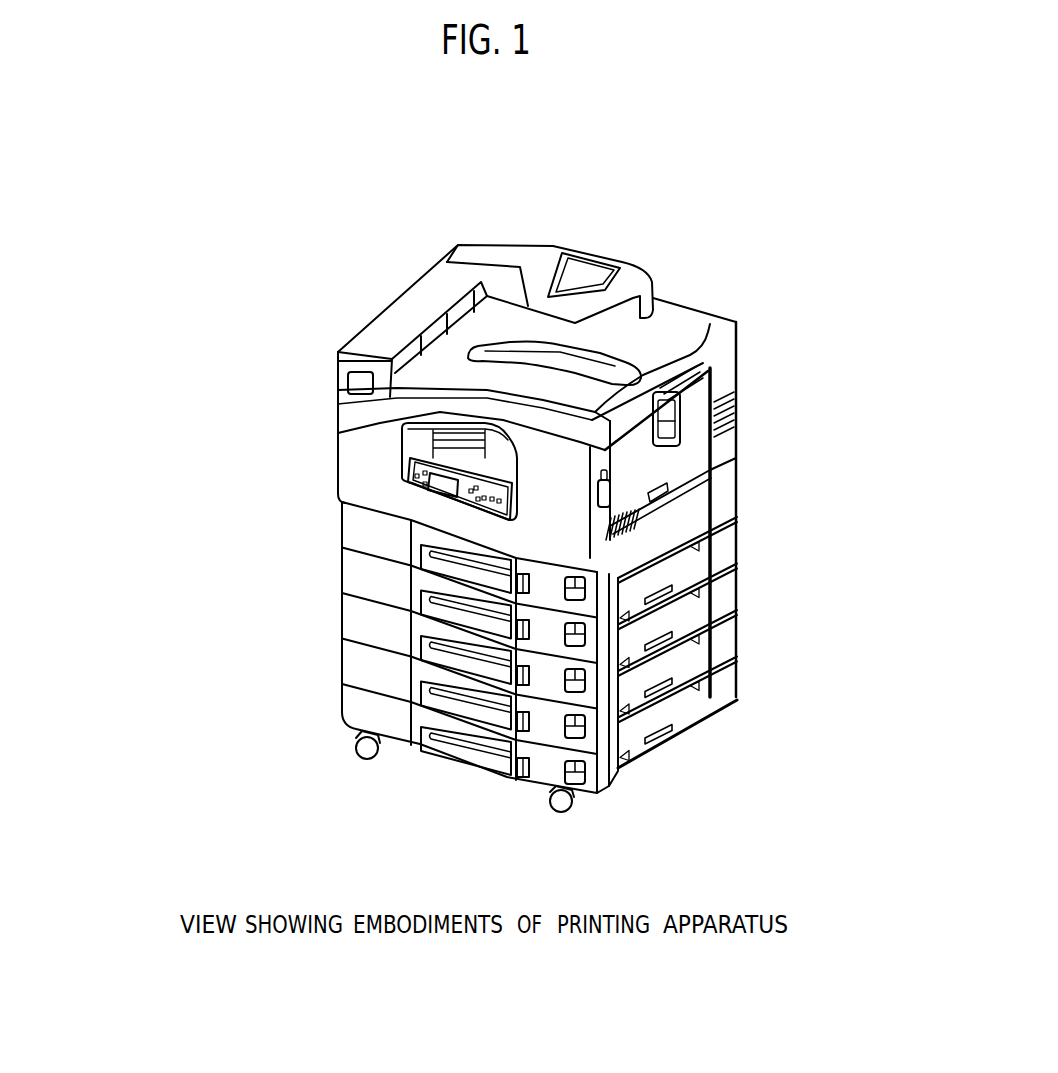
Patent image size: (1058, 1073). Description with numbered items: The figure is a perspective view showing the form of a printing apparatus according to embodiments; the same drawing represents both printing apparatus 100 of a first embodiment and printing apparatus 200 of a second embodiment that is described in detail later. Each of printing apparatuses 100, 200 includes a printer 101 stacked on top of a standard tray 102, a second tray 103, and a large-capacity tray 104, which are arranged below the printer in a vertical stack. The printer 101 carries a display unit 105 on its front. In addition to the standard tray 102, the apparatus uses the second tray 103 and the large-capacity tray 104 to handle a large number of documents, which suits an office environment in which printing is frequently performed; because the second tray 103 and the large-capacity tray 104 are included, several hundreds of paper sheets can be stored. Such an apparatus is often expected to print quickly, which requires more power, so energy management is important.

The printing apparatus 100 is at (559, 213).
The printing apparatus 200 is at (406, 546).
The printer 101 is at (337, 362).
The display unit 105 is at (402, 487).
The standard tray 102 is at (397, 519).
The second tray 103 is at (381, 583).
The large-capacity tray 104 is at (383, 670).